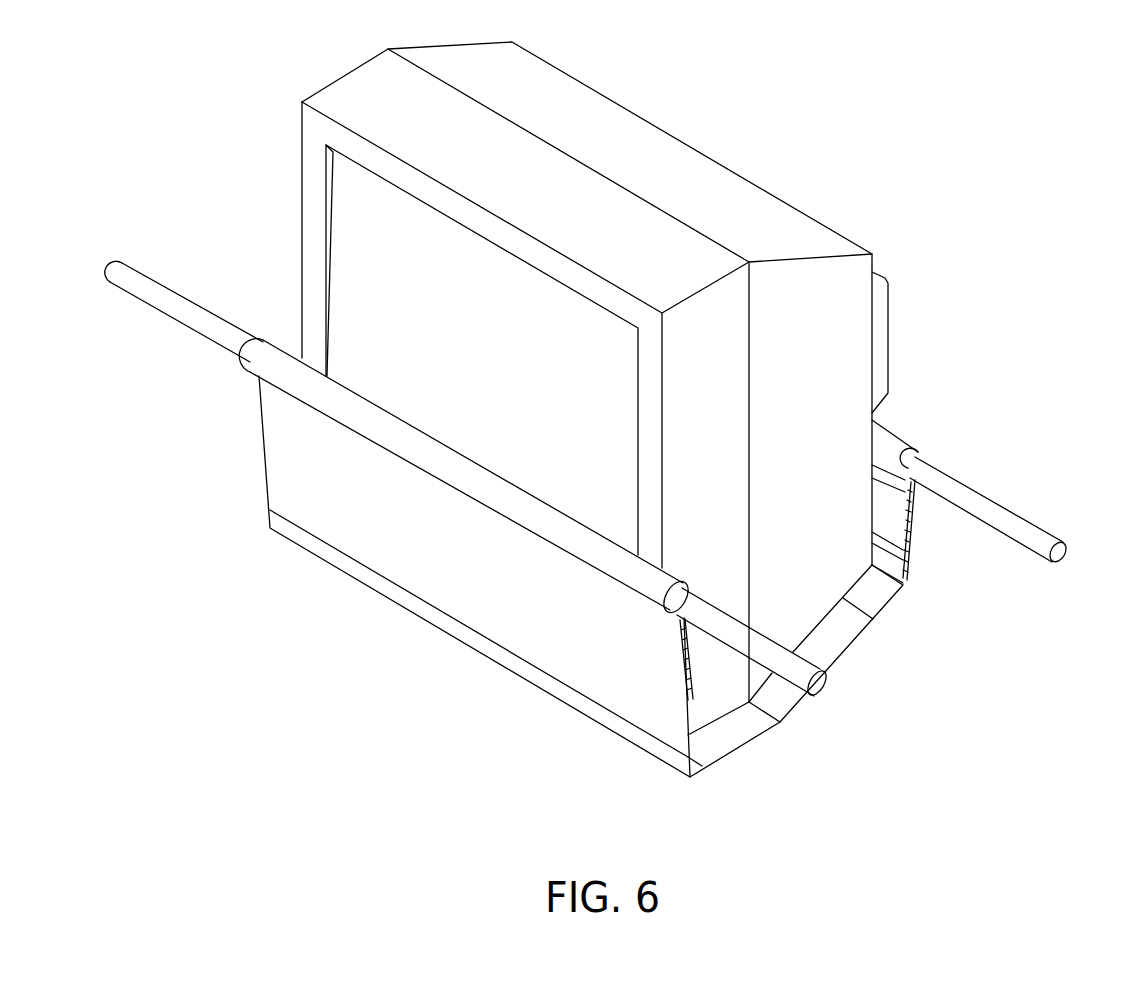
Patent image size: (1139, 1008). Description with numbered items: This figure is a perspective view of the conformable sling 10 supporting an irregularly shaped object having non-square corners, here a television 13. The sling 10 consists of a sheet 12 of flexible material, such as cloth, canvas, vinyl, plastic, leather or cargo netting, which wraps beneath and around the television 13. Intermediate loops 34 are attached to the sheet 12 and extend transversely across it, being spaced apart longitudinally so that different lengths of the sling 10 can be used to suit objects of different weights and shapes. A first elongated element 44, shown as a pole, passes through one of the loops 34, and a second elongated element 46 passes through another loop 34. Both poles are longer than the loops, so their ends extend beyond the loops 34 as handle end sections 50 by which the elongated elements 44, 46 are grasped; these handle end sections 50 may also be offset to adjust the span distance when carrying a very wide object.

The conformable sling 10 is at (833, 667).
The sheet 12 is at (850, 637).
The television 13 is at (833, 229).
The intermediate loops 34 is at (467, 455).
The first elongated element 44 is at (118, 266).
The second elongated element 46 is at (1060, 537).
The handle end sections 50 is at (165, 317).